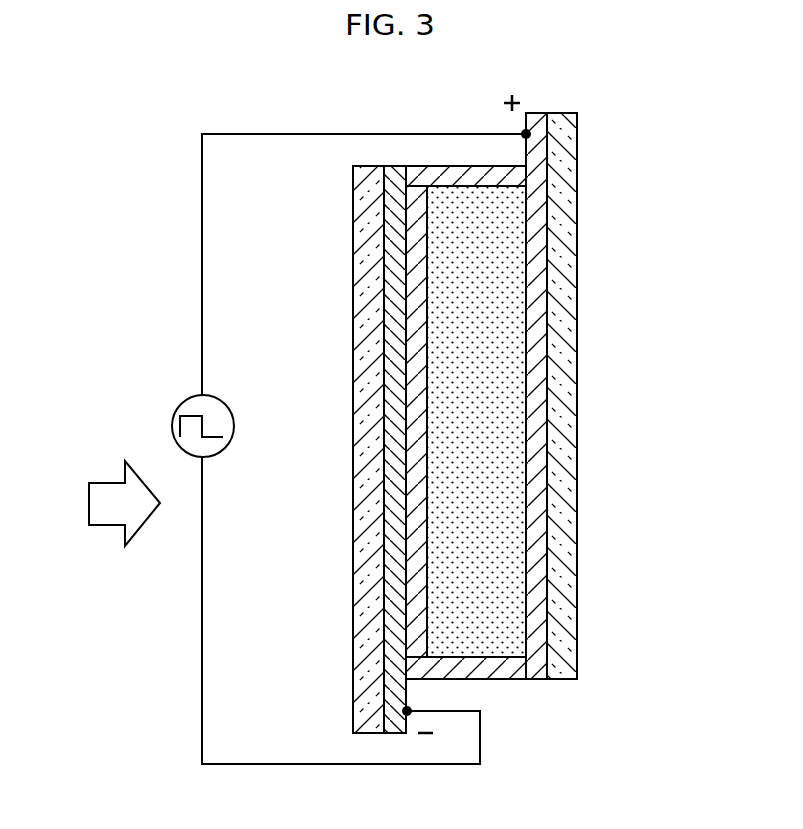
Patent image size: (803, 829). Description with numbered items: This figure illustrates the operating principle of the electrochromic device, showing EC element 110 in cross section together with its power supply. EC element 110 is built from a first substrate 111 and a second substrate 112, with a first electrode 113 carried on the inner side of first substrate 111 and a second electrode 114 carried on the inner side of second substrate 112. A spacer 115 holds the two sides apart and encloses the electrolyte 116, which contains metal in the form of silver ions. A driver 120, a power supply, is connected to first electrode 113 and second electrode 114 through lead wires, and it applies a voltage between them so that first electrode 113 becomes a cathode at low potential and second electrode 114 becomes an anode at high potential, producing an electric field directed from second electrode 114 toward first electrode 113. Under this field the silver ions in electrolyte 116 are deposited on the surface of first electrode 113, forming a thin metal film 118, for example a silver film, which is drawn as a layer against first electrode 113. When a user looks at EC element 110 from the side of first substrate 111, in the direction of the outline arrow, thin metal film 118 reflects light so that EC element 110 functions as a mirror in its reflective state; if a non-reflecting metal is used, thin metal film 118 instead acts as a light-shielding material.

The EC element 110 is at (613, 108).
The first substrate 111 is at (367, 293).
The second substrate 112 is at (563, 202).
The first electrode 113 is at (397, 393).
The second electrode 114 is at (538, 247).
The spacer 115 is at (490, 670).
The electrolyte 116 is at (500, 552).
The thin metal film 118 is at (417, 527).
The driver 120 is at (192, 397).